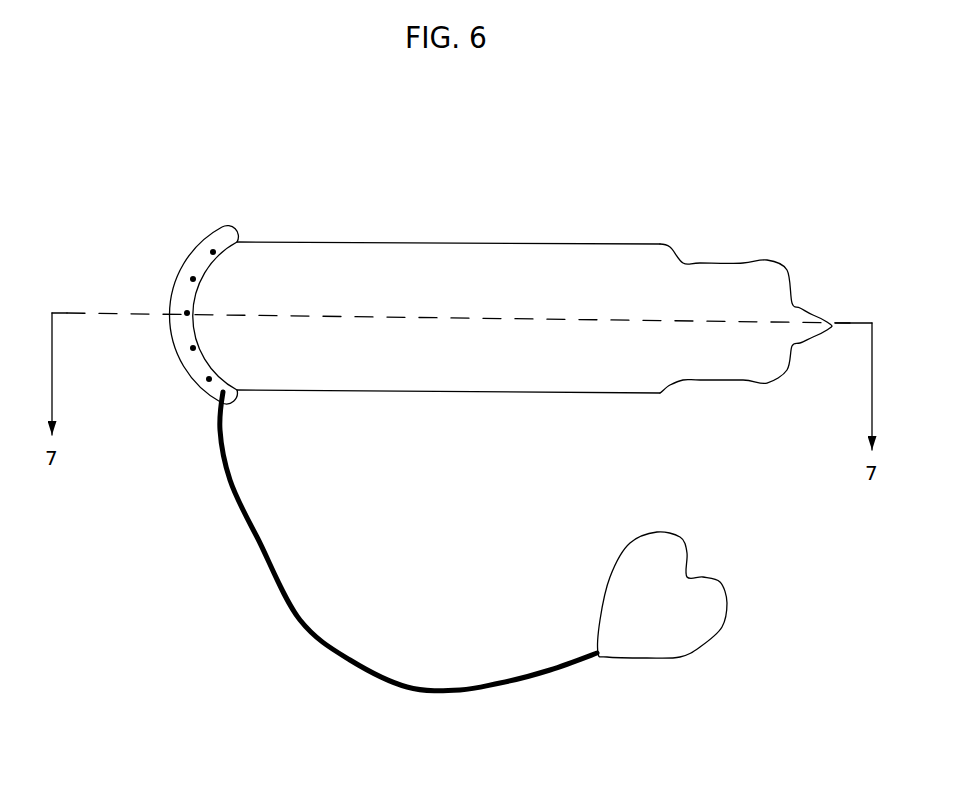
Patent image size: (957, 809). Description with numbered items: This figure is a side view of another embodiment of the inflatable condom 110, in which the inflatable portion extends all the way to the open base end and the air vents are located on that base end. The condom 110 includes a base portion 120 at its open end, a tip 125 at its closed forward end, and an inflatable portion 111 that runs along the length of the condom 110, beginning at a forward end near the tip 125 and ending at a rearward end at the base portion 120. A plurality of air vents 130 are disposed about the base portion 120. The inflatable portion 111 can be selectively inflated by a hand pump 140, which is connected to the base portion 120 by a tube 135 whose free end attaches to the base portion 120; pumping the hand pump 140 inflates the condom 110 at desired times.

The inflatable condom 110 is at (662, 182).
The inflatable portion 111 is at (450, 233).
The base portion 120 is at (227, 225).
The tip 125 is at (763, 385).
The air vents 130 is at (193, 279).
The tube 135 is at (260, 537).
The hand pump 140 is at (682, 642).